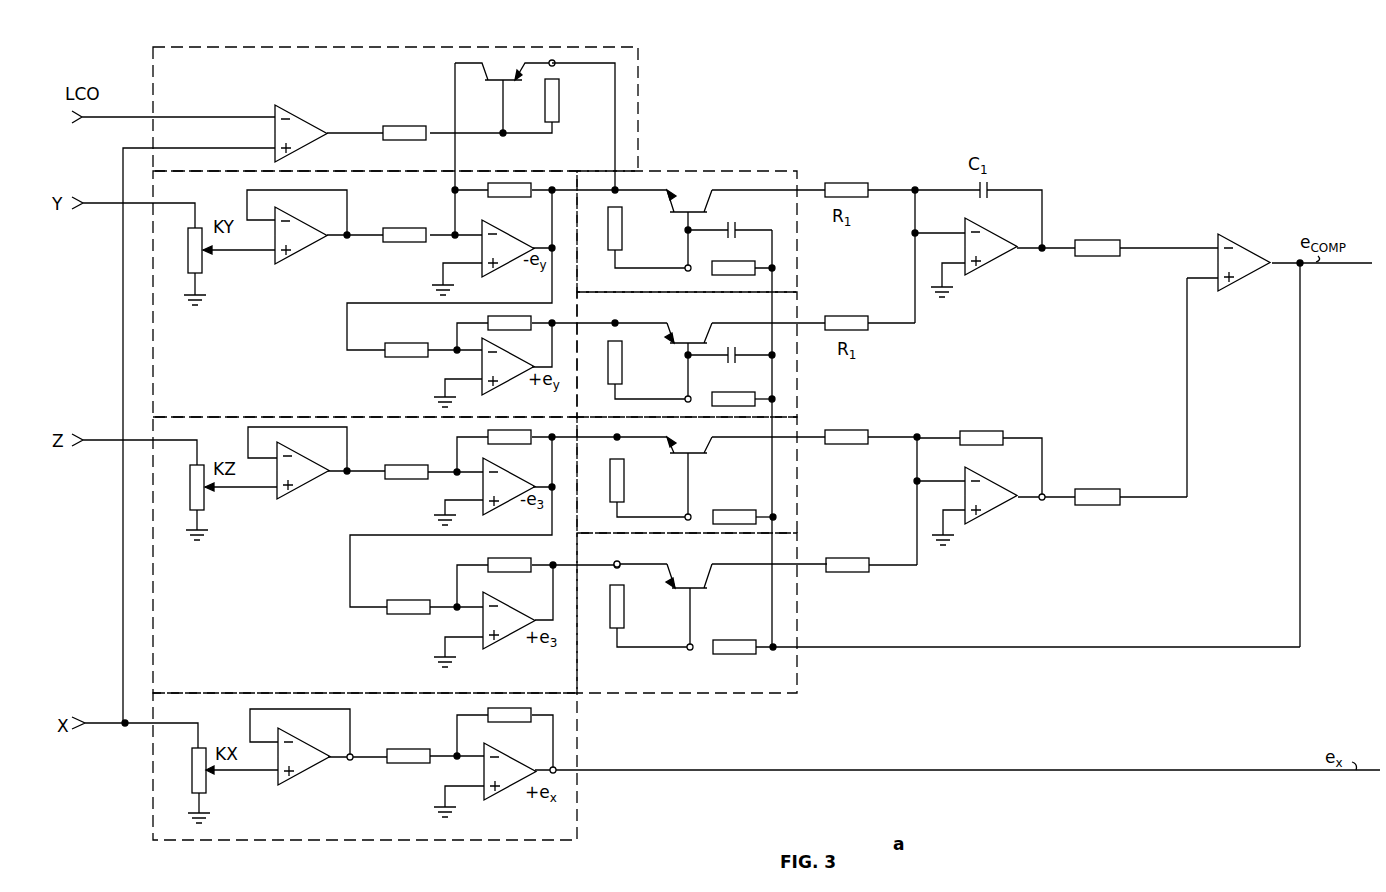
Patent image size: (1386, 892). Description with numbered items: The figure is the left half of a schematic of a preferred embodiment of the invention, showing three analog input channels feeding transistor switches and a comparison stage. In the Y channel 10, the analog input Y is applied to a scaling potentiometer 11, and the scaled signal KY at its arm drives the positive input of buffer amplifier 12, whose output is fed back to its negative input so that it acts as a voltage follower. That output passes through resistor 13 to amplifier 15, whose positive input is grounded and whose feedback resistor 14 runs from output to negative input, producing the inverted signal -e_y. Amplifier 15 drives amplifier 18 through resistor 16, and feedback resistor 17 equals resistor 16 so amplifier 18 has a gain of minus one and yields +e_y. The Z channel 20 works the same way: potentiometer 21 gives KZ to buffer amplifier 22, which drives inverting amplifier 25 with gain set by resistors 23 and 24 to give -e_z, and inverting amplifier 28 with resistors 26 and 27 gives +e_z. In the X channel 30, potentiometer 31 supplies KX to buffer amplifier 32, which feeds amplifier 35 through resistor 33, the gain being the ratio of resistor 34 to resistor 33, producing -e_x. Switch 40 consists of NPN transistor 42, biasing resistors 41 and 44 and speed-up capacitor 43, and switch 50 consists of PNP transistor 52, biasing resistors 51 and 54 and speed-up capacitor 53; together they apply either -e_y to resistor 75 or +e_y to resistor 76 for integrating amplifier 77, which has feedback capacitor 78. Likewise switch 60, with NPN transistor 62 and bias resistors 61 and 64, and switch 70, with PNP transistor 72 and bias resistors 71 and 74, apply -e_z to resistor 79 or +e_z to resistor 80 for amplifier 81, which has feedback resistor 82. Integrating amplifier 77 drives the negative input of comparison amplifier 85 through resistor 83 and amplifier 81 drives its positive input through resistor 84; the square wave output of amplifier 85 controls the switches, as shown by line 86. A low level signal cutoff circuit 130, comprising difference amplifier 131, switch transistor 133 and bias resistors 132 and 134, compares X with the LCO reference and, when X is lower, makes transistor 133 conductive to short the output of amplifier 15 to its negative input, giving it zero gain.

The Y channel amplifier block 10 is at (259, 341).
The scaling potentiometer 11 is at (186, 252).
The buffer amplifier 12 is at (318, 221).
The resistor 13 is at (402, 225).
The resistor 14 is at (505, 202).
The amplifier 15 is at (505, 270).
The resistor 16 is at (399, 338).
The resistor 17 is at (515, 332).
The amplifier 18 is at (510, 386).
The Z channel amplifier block 20 is at (263, 606).
The scaling potentiometer 21 is at (186, 492).
The buffer amplifier 22 is at (322, 459).
The resistor 23 is at (414, 463).
The resistor 24 is at (518, 447).
The inverting amplifier 25 is at (510, 509).
The resistor 26 is at (402, 597).
The resistor 27 is at (510, 575).
The inverting amplifier 28 is at (510, 650).
The X channel amplifier block 30 is at (274, 826).
The scaling potentiometer 31 is at (189, 773).
The buffer amplifier 32 is at (326, 741).
The resistor 33 is at (414, 748).
The resistor 34 is at (520, 727).
The amplifier 35 is at (510, 803).
The switch 40 is at (606, 281).
The biasing resistor 41 is at (623, 244).
The NPN transistor 42 is at (692, 199).
The speed-up capacitor 43 is at (738, 222).
The biasing resistor 44 is at (735, 256).
The switch 50 is at (606, 406).
The biasing resistor 51 is at (623, 364).
The PNP transistor 52 is at (696, 328).
The speed-up capacitor 53 is at (738, 348).
The biasing resistor 54 is at (735, 386).
The switch 60 is at (606, 523).
The bias resistor 61 is at (625, 482).
The NPN transistor 62 is at (694, 446).
The bias resistor 64 is at (735, 505).
The switch 70 is at (656, 681).
The bias resistor 71 is at (625, 604).
The PNP transistor 72 is at (696, 573).
The bias resistor 74 is at (735, 639).
The resistor 75 is at (858, 178).
The resistor 76 is at (860, 316).
The integrating amplifier 77 is at (985, 268).
The capacitor C1 78 is at (990, 198).
The resistor 79 is at (854, 431).
The resistor 80 is at (856, 553).
The amplifier 81 is at (1007, 488).
The feedback resistor 82 is at (994, 423).
The resistor 83 is at (1107, 240).
The resistor 84 is at (1105, 488).
The comparison amplifier 85 is at (1264, 244).
The dashed line 86 is at (1116, 640).
The low level signal cutoff circuit 130 is at (238, 78).
The difference amplifier 131 is at (320, 110).
The bias resistor 132 is at (412, 116).
The switch transistor 133 is at (492, 93).
The bias resistor 134 is at (560, 82).